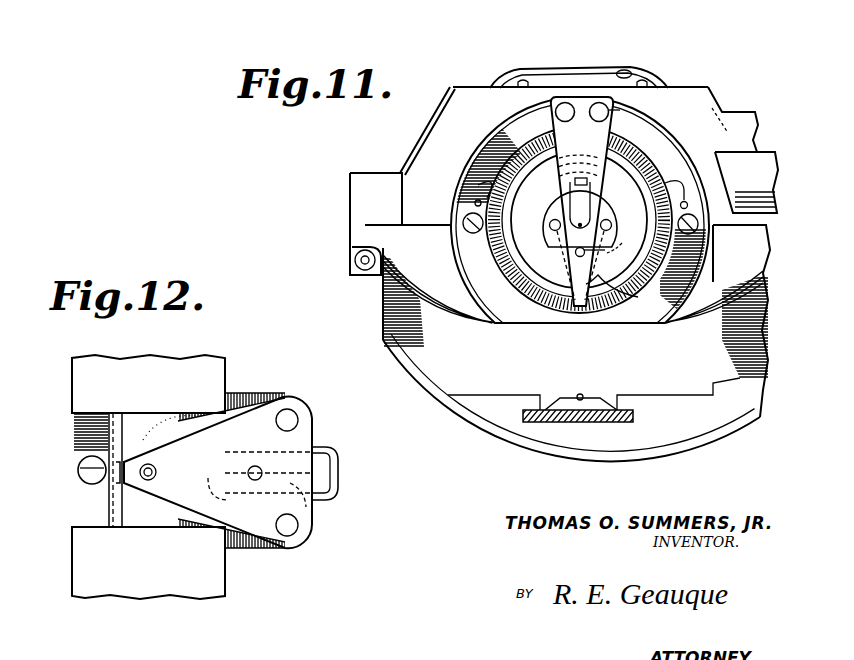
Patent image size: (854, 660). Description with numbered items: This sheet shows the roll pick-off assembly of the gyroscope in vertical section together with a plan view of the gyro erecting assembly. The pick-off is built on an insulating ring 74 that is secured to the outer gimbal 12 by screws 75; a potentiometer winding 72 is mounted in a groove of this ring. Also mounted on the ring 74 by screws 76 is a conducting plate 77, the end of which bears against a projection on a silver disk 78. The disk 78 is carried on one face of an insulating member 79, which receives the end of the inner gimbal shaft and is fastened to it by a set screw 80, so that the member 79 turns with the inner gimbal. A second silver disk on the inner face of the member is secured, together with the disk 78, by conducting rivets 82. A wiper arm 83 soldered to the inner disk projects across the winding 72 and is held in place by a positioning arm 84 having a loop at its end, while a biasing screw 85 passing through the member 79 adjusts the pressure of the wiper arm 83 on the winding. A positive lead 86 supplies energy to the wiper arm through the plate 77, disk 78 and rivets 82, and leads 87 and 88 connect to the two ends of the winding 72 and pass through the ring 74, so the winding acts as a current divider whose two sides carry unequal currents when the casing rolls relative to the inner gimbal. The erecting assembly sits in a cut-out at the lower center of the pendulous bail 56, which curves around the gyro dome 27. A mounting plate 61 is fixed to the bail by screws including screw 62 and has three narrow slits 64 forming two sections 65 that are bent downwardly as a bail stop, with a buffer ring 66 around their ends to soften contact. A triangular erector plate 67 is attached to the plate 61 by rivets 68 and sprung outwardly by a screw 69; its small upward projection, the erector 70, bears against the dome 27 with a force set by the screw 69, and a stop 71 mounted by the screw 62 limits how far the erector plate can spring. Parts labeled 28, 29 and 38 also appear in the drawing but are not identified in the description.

In FIG. 11, the outer gimbal 12 is at (418, 147).
In FIG. 11, the gyro dome 27 is at (573, 301).
In FIG. 11, the cap 28 is at (603, 73).
In FIG. 11, the lug 29 is at (645, 83).
In FIG. 11, the mounting flange 38 is at (770, 152).
In FIG. 11, the pendulous bail 56 is at (660, 418).
In FIG. 12, the pendulous bail 56 is at (207, 382).
In FIG. 11, the mounting plate 61 is at (578, 420).
In FIG. 12, the mounting plate 61 is at (80, 503).
In FIG. 12, the screw 62 is at (86, 464).
In FIG. 12, the narrow slits 64 is at (246, 450).
In FIG. 12, the sections 65 is at (306, 500).
In FIG. 12, the buffer ring 66 is at (338, 453).
In FIG. 11, the triangular erector plate 67 is at (596, 403).
In FIG. 12, the triangular erector plate 67 is at (173, 487).
In FIG. 12, the rivets 68 is at (298, 420).
In FIG. 12, the screw 69 is at (255, 481).
In FIG. 11, the erector 70 is at (581, 393).
In FIG. 12, the erector 70 is at (156, 470).
In FIG. 12, the stop 71 is at (118, 523).
In FIG. 11, the potentiometer winding 72 is at (702, 256).
In FIG. 11, the insulating ring 74 is at (673, 147).
In FIG. 11, the screws 75 is at (468, 230).
In FIG. 11, the screws 76 is at (598, 102).
In FIG. 11, the conducting plate 77 is at (605, 141).
In FIG. 11, the silver disk 78 is at (601, 208).
In FIG. 11, the insulating member 79 is at (610, 248).
In FIG. 11, the set screw 80 is at (574, 182).
In FIG. 11, the conducting rivets 82 is at (611, 225).
In FIG. 11, the wiper arm 83 is at (567, 273).
In FIG. 11, the positioning arm 84 is at (638, 297).
In FIG. 11, the biasing screw 85 is at (585, 254).
In FIG. 11, the positive lead 86 is at (610, 112).
In FIG. 11, the lead 87 is at (475, 186).
In FIG. 11, the lead 88 is at (687, 175).